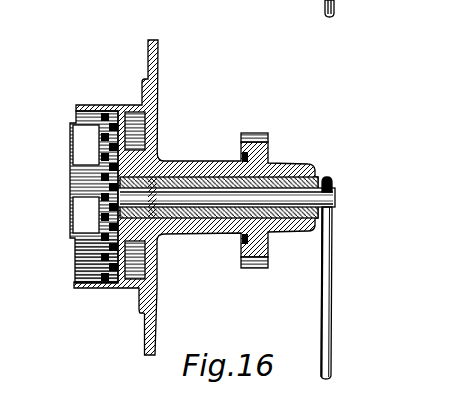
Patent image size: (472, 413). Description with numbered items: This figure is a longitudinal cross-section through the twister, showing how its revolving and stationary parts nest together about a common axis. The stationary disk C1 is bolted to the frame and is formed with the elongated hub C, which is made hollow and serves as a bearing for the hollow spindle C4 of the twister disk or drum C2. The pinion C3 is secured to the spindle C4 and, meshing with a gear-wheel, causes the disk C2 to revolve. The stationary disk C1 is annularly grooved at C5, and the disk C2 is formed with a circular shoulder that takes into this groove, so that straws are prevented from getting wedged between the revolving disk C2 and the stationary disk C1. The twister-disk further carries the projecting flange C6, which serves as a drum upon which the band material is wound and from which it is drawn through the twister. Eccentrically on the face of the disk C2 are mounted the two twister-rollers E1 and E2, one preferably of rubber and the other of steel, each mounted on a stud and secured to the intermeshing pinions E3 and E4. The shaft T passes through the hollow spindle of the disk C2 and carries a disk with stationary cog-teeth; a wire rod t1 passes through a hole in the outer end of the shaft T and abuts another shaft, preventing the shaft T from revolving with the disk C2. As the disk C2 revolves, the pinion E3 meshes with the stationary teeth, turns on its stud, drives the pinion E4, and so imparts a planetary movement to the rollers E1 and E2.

The elongated hub C is at (211, 160).
The stationary disk C1 is at (158, 50).
The twister disk or drum C2 is at (141, 93).
The pinion C3 is at (256, 133).
The hollow spindle C4 is at (325, 177).
The annular groove C5 is at (158, 87).
The projecting flange C6 is at (90, 289).
The shaft T is at (337, 197).
The wire rod t1 is at (331, 253).
The twister-roller E1 is at (78, 149).
The twister-roller E2 is at (75, 202).
The pinion E3 is at (86, 145).
The pinion E4 is at (86, 215).